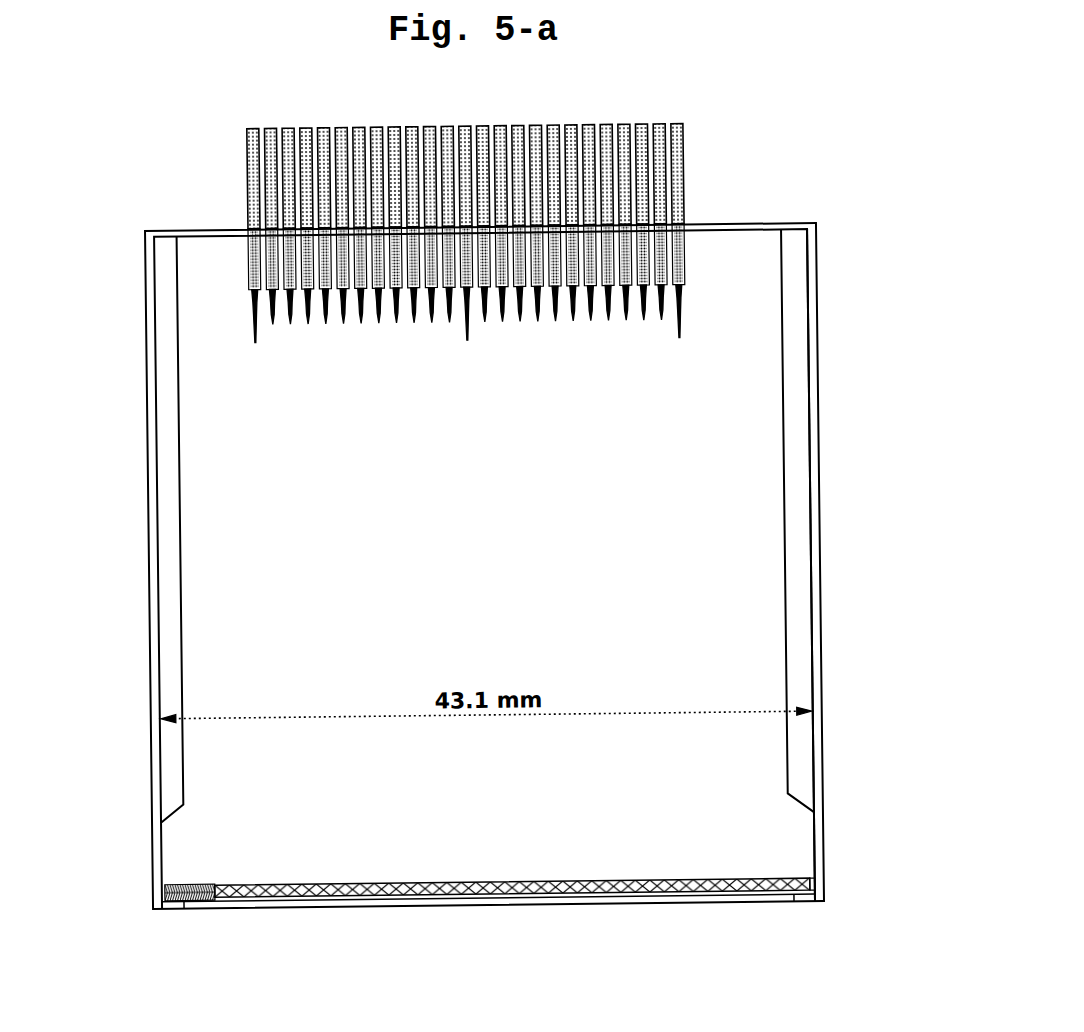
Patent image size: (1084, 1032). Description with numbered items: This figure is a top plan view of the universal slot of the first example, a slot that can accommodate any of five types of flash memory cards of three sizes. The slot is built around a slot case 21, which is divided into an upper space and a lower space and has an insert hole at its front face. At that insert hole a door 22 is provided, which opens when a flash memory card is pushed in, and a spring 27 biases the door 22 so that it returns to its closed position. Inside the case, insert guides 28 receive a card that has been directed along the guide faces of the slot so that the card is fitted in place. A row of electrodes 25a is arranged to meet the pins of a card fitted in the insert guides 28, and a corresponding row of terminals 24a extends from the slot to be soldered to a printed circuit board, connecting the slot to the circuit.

The slot case 21 is at (240, 597).
The door 22 is at (676, 895).
The terminals 24a is at (688, 170).
The electrodes 25a is at (686, 285).
The spring 27 is at (193, 895).
The insert guides 28 is at (792, 548).